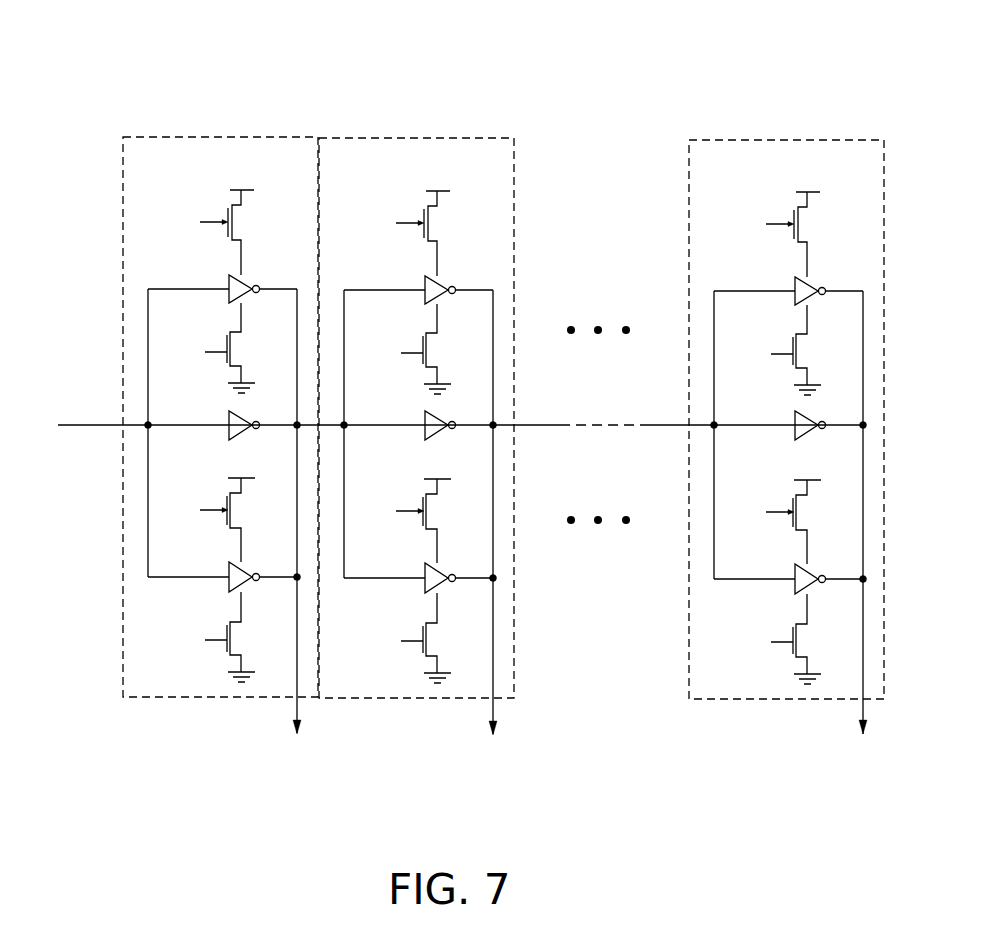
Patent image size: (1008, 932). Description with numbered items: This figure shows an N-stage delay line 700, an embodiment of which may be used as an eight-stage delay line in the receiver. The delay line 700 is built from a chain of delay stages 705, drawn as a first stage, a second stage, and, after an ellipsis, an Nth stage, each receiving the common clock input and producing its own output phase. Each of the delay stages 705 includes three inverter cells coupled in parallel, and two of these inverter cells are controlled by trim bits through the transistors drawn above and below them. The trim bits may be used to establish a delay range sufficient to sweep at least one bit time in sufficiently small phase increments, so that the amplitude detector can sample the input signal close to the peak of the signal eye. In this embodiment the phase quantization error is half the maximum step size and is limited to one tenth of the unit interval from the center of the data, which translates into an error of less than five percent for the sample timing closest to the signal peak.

The N-stage delay line 700 is at (136, 51).
The delay stage 705 is at (503, 437).